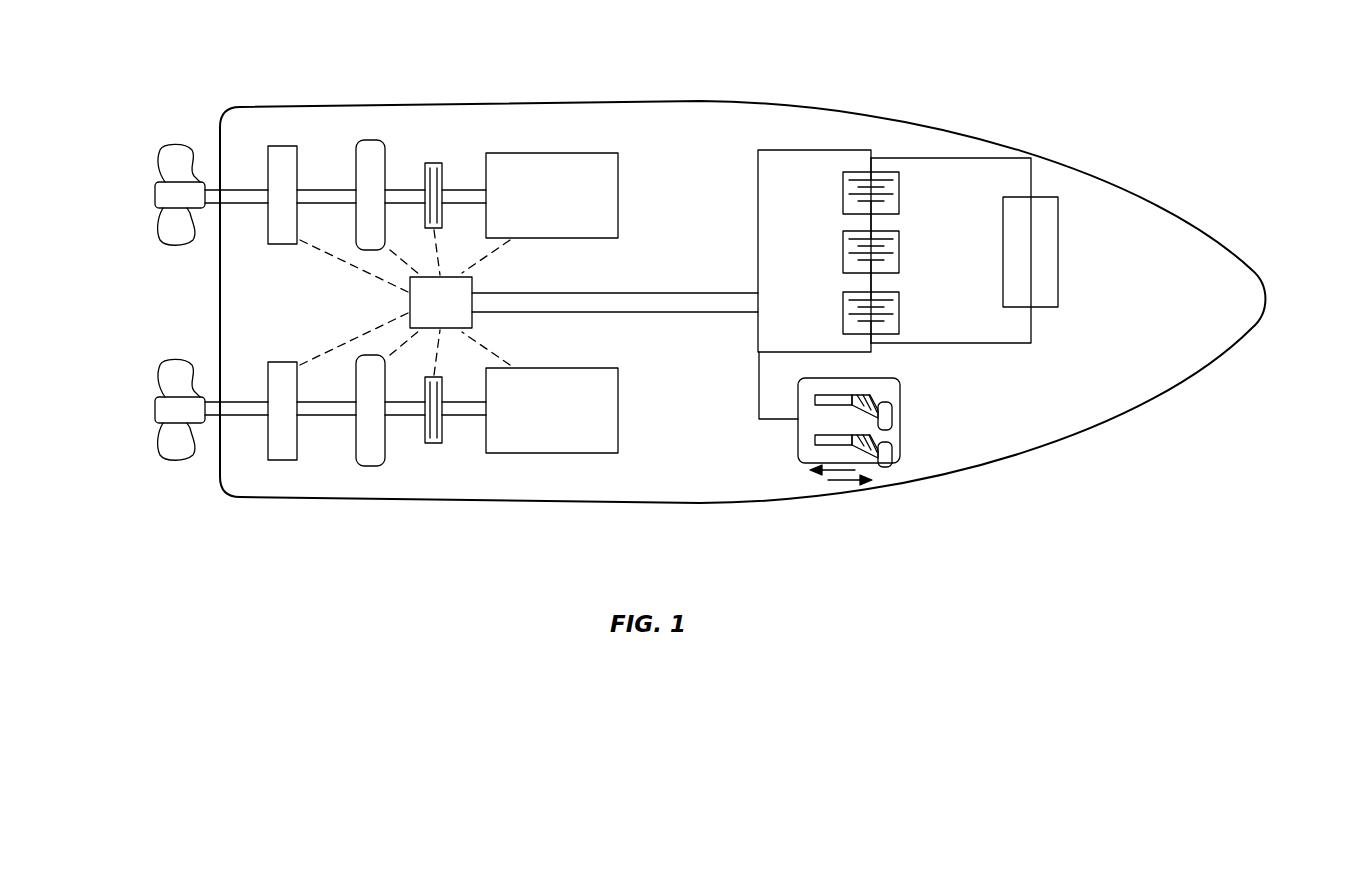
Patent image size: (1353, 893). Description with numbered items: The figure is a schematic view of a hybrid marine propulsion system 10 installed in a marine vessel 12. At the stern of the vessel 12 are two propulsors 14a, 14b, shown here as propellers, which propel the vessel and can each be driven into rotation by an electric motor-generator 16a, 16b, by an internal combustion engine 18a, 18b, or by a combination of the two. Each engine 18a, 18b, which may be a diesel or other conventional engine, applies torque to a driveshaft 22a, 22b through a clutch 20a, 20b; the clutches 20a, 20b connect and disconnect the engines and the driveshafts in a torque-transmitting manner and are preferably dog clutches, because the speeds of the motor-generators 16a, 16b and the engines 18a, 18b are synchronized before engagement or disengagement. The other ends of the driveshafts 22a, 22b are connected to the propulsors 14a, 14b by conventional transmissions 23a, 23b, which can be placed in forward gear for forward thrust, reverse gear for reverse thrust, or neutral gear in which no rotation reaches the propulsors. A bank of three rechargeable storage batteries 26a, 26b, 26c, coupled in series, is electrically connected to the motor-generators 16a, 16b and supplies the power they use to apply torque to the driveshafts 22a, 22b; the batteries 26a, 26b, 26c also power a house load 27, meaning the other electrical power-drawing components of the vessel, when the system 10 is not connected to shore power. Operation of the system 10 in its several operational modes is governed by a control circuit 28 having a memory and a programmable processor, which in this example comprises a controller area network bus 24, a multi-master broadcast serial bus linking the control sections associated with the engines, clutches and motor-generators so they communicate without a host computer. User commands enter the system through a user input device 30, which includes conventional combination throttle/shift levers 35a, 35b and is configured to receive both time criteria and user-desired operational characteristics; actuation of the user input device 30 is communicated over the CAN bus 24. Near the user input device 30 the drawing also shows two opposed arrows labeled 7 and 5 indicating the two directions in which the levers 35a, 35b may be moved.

The marine vessel 12 is at (1132, 143).
The hybrid marine propulsion system 10 is at (702, 425).
The propulsor 14a is at (168, 154).
The propulsor 14b is at (168, 453).
The driveshaft 22a is at (330, 188).
The driveshaft 22b is at (333, 417).
The transmission 23a is at (285, 146).
The transmission 23b is at (285, 460).
The electric motor-generator 16a is at (372, 140).
The electric motor-generator 16b is at (373, 467).
The clutch 20a is at (435, 162).
The clutch 20b is at (435, 443).
The internal combustion engine 18a is at (565, 153).
The internal combustion engine 18b is at (592, 455).
The control circuit 28 is at (422, 302).
The controller area network bus 24 is at (812, 150).
The rechargeable storage battery 26a is at (899, 192).
The rechargeable storage battery 26b is at (899, 252).
The rechargeable storage battery 26c is at (899, 312).
The house load 27 is at (1058, 248).
The user input device 30 is at (778, 478).
The combination throttle/shift lever 35a is at (888, 410).
The combination throttle/shift lever 35b is at (888, 447).
The reverse direction 7 is at (822, 473).
The forward direction 5 is at (855, 483).